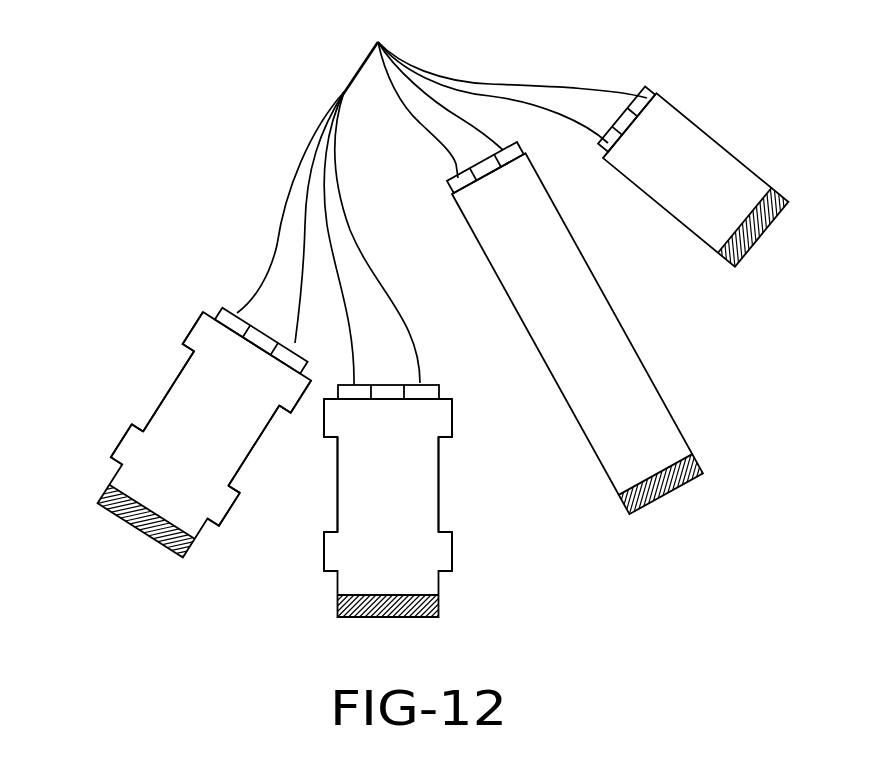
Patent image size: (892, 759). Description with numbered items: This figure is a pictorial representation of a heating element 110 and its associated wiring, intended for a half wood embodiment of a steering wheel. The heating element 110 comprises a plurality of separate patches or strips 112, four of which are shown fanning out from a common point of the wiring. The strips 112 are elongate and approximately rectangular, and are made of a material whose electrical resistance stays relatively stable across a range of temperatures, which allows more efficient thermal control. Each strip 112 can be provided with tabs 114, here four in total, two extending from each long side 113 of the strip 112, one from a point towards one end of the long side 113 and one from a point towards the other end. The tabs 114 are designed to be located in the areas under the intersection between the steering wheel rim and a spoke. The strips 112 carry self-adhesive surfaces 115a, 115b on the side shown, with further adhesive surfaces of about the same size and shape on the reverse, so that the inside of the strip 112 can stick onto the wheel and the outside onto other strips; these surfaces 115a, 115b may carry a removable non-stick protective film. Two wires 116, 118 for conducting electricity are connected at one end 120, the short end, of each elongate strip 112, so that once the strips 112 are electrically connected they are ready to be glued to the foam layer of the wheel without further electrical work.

The heating element 110 is at (416, 330).
The strip 112 is at (173, 378).
The long side 113 is at (160, 402).
The tab 114 is at (198, 332).
The self-adhesive surface 115a is at (656, 98).
The self-adhesive surface 115b is at (762, 222).
The wire 116 is at (265, 277).
The wire 118 is at (302, 233).
The end of strip 120 is at (208, 305).